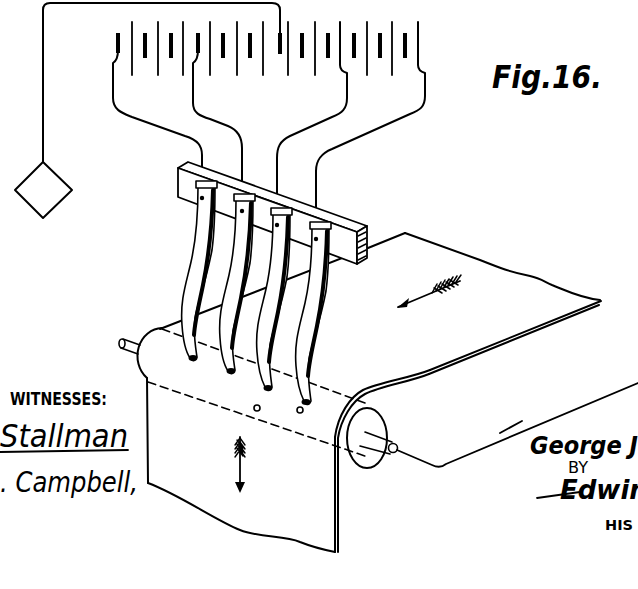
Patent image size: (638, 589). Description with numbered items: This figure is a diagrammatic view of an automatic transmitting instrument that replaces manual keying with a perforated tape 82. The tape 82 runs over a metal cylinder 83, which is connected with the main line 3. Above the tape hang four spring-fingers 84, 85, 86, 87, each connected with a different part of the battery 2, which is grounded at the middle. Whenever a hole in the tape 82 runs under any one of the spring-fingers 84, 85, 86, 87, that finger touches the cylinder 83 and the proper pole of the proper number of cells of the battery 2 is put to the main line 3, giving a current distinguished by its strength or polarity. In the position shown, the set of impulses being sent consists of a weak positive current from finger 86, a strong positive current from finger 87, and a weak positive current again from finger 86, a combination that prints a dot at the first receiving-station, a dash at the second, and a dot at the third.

The battery 2 is at (261, 64).
The main line 3 is at (517, 425).
The tape 82 is at (374, 392).
The metal cylinder 83 is at (266, 398).
The spring-finger 84 is at (193, 271).
The spring-finger 85 is at (233, 284).
The spring-finger 86 is at (270, 309).
The spring-finger 87 is at (308, 317).